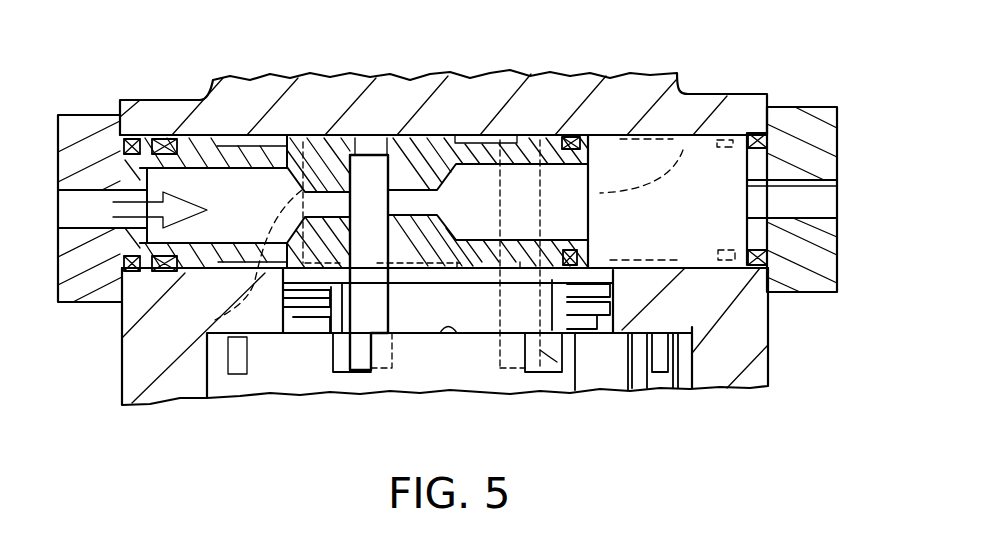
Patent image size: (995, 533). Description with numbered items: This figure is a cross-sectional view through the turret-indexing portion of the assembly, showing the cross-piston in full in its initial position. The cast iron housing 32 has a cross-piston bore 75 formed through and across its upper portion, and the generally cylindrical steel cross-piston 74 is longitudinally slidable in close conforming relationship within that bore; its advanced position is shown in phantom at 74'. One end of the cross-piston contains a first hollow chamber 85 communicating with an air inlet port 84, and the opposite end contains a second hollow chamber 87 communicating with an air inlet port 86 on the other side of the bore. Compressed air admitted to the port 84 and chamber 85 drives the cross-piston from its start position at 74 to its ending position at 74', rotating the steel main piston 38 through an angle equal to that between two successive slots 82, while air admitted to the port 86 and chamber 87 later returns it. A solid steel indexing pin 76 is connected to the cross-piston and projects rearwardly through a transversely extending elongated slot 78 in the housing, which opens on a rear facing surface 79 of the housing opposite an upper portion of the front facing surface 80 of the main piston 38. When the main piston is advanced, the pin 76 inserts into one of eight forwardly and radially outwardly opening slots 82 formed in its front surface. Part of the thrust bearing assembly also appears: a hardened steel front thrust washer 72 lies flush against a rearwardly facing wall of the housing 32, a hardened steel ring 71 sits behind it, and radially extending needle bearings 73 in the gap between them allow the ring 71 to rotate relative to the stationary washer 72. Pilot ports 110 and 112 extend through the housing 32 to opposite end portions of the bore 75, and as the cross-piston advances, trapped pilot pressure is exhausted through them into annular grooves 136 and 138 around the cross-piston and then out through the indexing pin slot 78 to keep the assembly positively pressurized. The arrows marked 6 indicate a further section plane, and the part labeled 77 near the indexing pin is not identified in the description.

The housing 32 is at (484, 85).
The annular groove 136 is at (267, 135).
The annular groove 138 is at (522, 133).
The cross-piston 74 is at (606, 144).
The cross-piston (advanced position) 74' is at (786, 149).
The pilot port 112 is at (702, 165).
The air inlet port 86 is at (795, 198).
The second hollow chamber 87 is at (560, 163).
The cross-piston bore 75 is at (600, 200).
The first hollow chamber 85 is at (252, 170).
The elongated slot 78 is at (440, 305).
The air inlet port 84 is at (98, 193).
The section line 6 is at (58, 210).
The pilot port 110 is at (255, 273).
The front thrust washer 72 is at (616, 300).
The needle bearings 73 is at (616, 306).
The front facing surface 80 is at (651, 326).
The main piston 38 is at (692, 368).
The slots 82 is at (345, 369).
The indexing pin 76 is at (403, 320).
The spring 77 is at (459, 333).
The rear facing surface 79 is at (478, 283).
The ring 71 is at (580, 333).